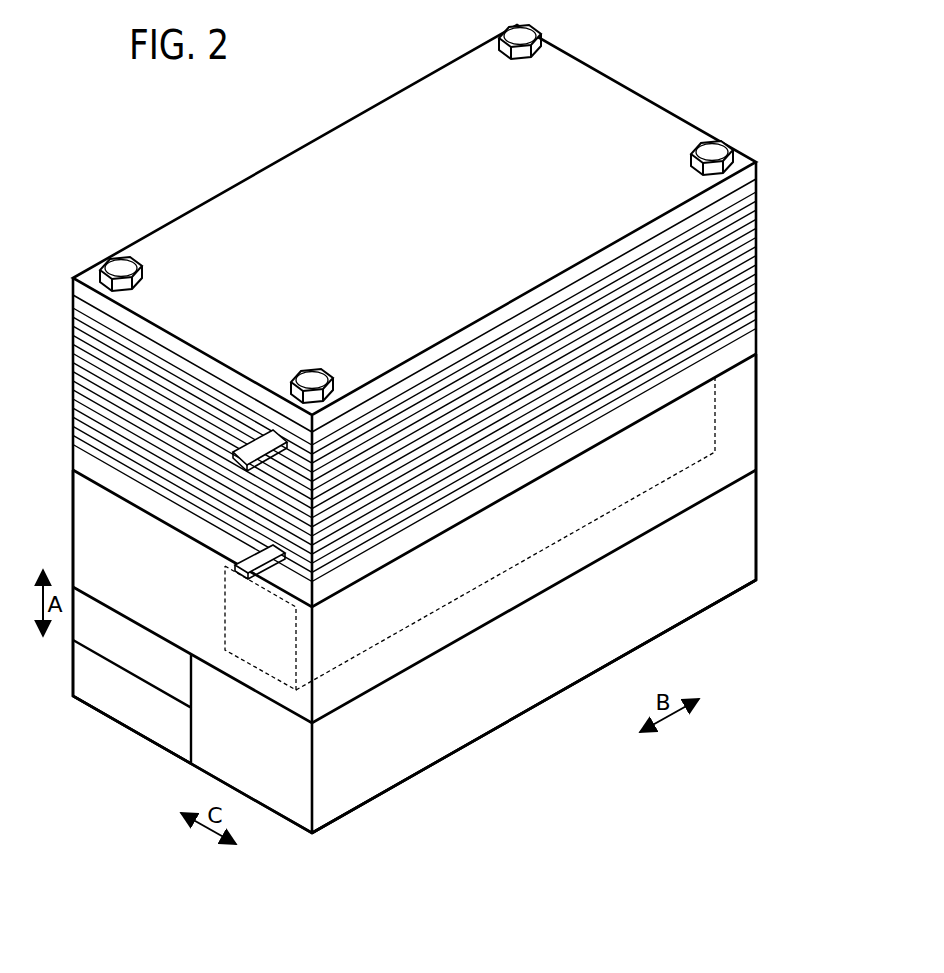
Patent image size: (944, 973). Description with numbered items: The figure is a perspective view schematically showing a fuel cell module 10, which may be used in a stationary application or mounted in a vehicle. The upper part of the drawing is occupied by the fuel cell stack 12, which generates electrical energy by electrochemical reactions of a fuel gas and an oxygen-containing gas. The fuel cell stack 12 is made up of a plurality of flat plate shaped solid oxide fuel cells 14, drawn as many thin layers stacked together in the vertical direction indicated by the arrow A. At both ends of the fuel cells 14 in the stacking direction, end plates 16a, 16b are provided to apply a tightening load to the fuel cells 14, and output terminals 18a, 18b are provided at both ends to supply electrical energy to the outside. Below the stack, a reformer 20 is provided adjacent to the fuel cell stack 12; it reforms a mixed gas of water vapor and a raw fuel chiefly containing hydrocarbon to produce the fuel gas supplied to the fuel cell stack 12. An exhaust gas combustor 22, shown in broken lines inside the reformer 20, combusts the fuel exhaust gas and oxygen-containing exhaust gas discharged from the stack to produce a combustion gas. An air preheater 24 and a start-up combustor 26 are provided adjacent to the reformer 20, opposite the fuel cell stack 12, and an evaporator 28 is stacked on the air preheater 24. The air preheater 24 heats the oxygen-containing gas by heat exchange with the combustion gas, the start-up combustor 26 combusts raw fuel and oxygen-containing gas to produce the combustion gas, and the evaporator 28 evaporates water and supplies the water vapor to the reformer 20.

The fuel cell module 10 is at (668, 55).
The fuel cell stack 12 is at (63, 325).
The solid oxide fuel cells 14 is at (757, 217).
The end plate 16a is at (757, 175).
The end plate 16b is at (757, 342).
The output terminal 18a is at (252, 448).
The output terminal 18b is at (263, 575).
The reformer 20 is at (763, 397).
The exhaust gas combustor 22 is at (715, 427).
The air preheater 24 is at (132, 663).
The start-up combustor 26 is at (540, 697).
The evaporator 28 is at (147, 723).